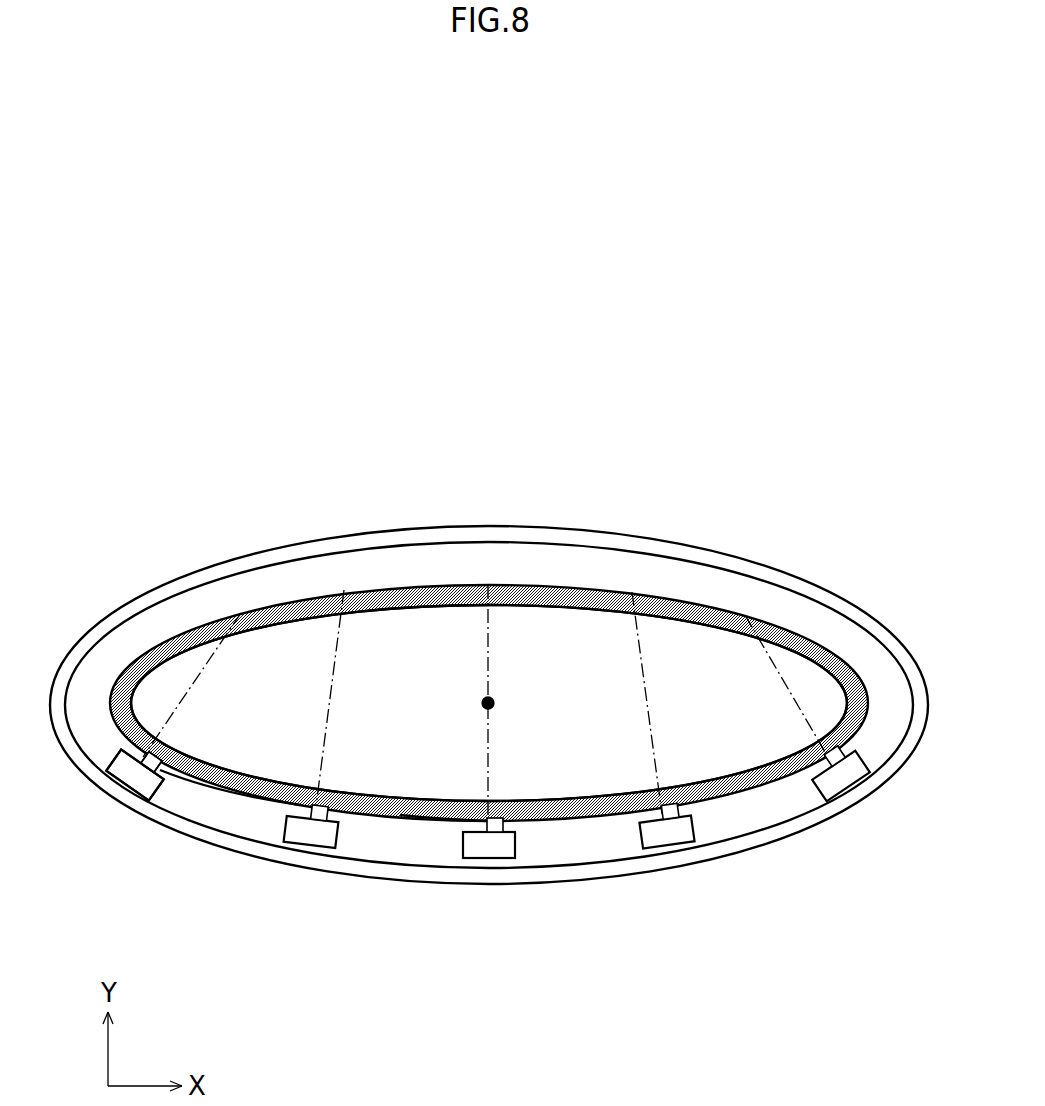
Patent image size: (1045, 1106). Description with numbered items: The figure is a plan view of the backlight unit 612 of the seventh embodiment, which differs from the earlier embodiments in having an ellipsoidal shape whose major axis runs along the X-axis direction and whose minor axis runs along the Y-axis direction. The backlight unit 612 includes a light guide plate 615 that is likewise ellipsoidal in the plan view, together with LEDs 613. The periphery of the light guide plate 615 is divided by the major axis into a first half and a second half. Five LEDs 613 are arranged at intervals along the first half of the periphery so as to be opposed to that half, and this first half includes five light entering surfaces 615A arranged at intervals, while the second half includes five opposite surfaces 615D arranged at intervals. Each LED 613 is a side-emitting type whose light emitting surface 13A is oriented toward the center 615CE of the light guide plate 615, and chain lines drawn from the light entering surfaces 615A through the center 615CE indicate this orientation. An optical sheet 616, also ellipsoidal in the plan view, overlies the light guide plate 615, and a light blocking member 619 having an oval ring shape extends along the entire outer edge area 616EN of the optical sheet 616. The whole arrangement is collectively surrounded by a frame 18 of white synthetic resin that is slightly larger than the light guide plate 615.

The backlight unit 612 is at (484, 656).
The frame 18 is at (845, 602).
The light guide plate 615 is at (172, 635).
The opposite surface 615D is at (245, 612).
The center of the light guide plate 615CE is at (496, 701).
The light entering surface 615A is at (147, 805).
The optical sheet 616 is at (292, 667).
The outer edge area of the optical sheet 616EN is at (220, 790).
The light blocking member 619 is at (448, 822).
The LED 613 is at (120, 787).
The light emitting surface 13A is at (131, 752).